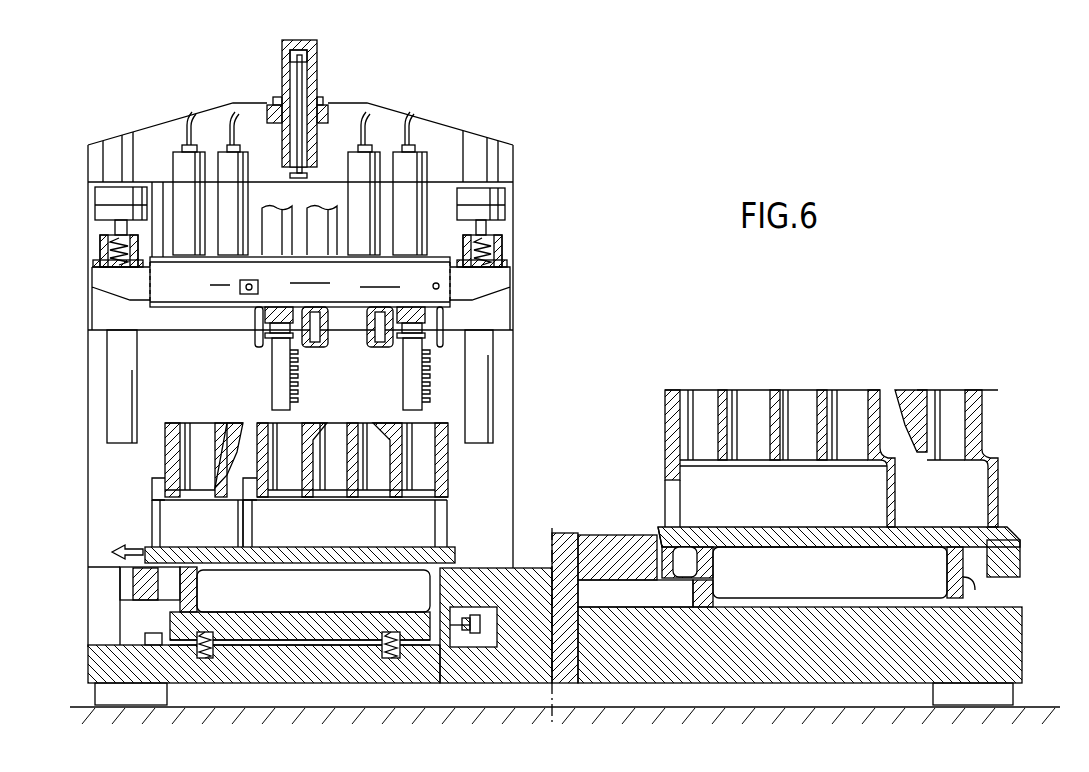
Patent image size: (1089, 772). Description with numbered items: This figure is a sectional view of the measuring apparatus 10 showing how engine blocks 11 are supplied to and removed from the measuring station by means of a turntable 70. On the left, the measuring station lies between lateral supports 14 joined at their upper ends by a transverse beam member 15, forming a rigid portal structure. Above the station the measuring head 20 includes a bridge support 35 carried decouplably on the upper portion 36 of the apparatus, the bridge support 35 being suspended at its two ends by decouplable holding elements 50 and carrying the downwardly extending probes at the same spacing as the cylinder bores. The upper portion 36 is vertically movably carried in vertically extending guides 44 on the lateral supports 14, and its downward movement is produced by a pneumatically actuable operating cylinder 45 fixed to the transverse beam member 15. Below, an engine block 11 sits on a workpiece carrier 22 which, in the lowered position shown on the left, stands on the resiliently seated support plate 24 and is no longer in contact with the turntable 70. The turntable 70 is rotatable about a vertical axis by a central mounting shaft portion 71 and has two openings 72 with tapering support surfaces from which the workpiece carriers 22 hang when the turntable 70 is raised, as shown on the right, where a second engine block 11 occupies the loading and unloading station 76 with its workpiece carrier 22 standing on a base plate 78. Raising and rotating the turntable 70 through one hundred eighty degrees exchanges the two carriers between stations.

The apparatus 10 is at (511, 125).
The engine block 11 is at (448, 470).
The lateral support 14 is at (405, 109).
The transverse beam member 15 is at (336, 113).
The measuring head 20 is at (225, 128).
The workpiece carrier 22 is at (316, 544).
The support plate 24 is at (265, 627).
The bridge support 35 is at (474, 287).
The upper portion of the apparatus 36 is at (449, 175).
The vertically extending guides 44 is at (122, 383).
The operating cylinder 45 is at (281, 87).
The decouplable holding elements 50 is at (505, 233).
The turntable 70 is at (1000, 550).
The central mounting shaft portion 71 is at (586, 643).
The openings 72 is at (990, 585).
The loading and unloading station 76 is at (875, 386).
The base plate 78 is at (729, 615).